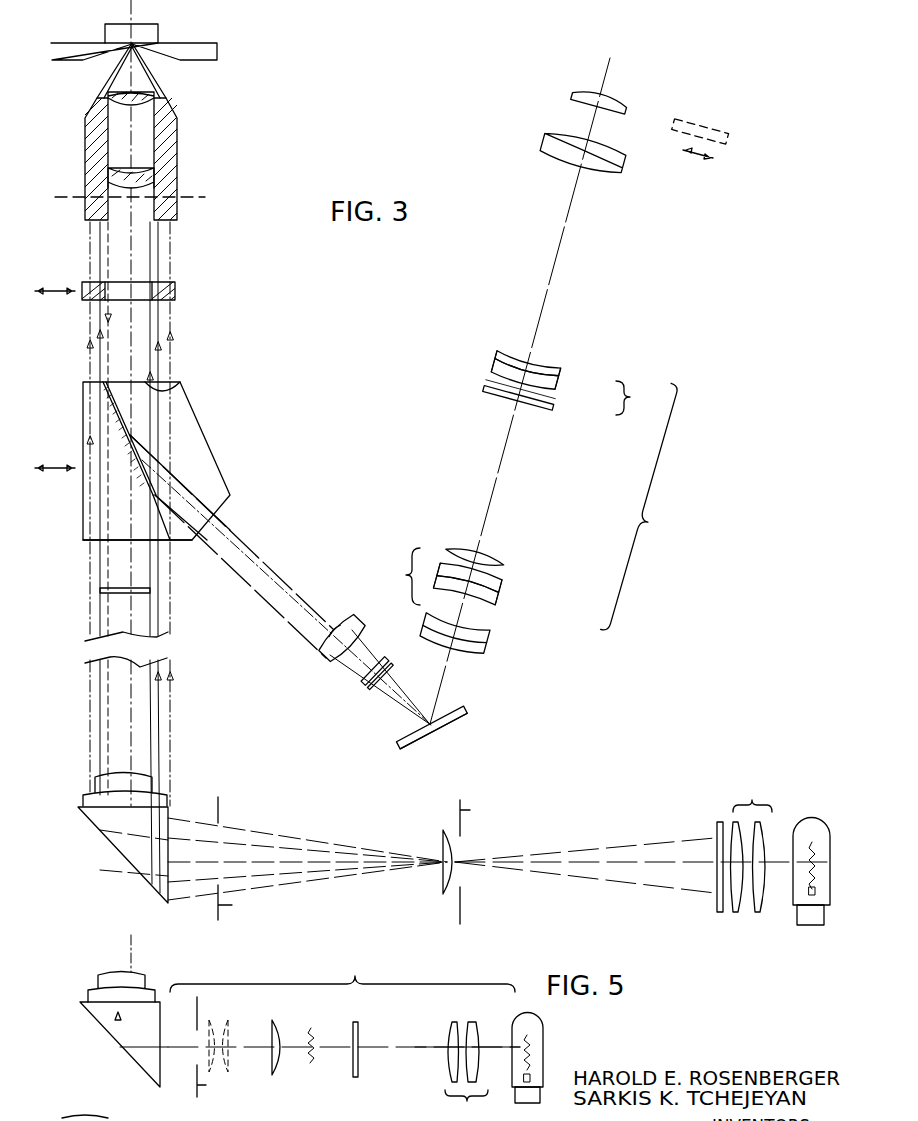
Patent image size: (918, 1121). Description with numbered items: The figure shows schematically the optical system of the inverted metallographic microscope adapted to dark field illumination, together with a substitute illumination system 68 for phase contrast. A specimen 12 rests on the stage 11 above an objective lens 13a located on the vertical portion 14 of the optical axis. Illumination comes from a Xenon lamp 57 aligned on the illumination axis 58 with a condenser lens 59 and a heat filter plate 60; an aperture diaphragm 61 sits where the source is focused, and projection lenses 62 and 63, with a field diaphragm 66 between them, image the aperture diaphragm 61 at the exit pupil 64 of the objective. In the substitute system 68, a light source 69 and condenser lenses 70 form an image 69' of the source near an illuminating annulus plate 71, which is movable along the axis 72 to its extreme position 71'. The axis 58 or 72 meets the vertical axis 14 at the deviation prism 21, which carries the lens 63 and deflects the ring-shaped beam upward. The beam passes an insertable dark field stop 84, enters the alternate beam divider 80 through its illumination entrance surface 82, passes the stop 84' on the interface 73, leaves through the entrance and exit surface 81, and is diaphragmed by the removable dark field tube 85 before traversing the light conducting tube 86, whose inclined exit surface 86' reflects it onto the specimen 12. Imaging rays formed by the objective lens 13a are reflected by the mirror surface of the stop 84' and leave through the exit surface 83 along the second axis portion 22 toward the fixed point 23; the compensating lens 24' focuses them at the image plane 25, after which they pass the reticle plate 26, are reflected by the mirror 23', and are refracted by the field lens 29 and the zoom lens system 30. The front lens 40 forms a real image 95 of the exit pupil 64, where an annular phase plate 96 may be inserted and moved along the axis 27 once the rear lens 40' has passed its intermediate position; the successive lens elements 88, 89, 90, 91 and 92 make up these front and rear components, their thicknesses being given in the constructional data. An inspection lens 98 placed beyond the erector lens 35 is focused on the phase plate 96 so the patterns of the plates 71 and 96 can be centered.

In FIG. 3, the stage 11 is at (214, 52).
In FIG. 3, the specimen 12 is at (158, 34).
In FIG. 3, the objective lens 13a is at (145, 143).
In FIG. 3, the vertical portion of the optical axis 14 is at (131, 253).
In FIG. 5, the vertical portion of the optical axis 14 is at (120, 945).
In FIG. 3, the deviation prism 21 is at (172, 814).
In FIG. 5, the deviation prism 21 is at (106, 1016).
In FIG. 3, the second axis portion 22 is at (250, 575).
In FIG. 3, the fixed point 23 is at (409, 730).
In FIG. 3, the mirror 23' is at (444, 738).
In FIG. 3, the compensating lens 24' is at (323, 643).
In FIG. 3, the image plane 25 is at (368, 680).
In FIG. 3, the reticle plate 26 is at (378, 676).
In FIG. 3, the axis 27 is at (490, 489).
In FIG. 3, the field lens 29 is at (458, 648).
In FIG. 3, the zoom lens system 30 is at (644, 508).
In FIG. 3, the erector lens 35 is at (626, 161).
In FIG. 3, the front lens 40 is at (471, 571).
In FIG. 3, the rear lens 40' is at (562, 368).
In FIG. 3, the Xenon lamp 57 is at (814, 820).
In FIG. 3, the illumination axis 58 is at (633, 866).
In FIG. 3, the condenser lens 59 is at (752, 845).
In FIG. 3, the heat filter plate 60 is at (717, 830).
In FIG. 5, the heat filter plate 60 is at (450, 1064).
In FIG. 3, the aperture diaphragm 61 is at (480, 862).
In FIG. 3, the projection lens 62 is at (443, 845).
In FIG. 5, the projection lens 62 is at (280, 1072).
In FIG. 3, the projection lens 63 is at (88, 791).
In FIG. 5, the projection lens 63 is at (88, 987).
In FIG. 3, the exit pupil 64 is at (206, 197).
In FIG. 3, the field diaphragm 66 is at (240, 858).
In FIG. 5, the field diaphragm 66 is at (200, 1084).
In FIG. 5, the substitute illumination system 68 is at (342, 972).
In FIG. 5, the light source 69 is at (555, 1057).
In FIG. 5, the image of the light source 69' is at (322, 1068).
In FIG. 5, the condenser lenses 70 is at (466, 1071).
In FIG. 5, the illuminating annulus plate 71 is at (369, 1065).
In FIG. 5, the opposite extreme position of illuminating annulus plate 71' is at (238, 1054).
In FIG. 5, the axis 72 is at (420, 1052).
In FIG. 3, the interface 73 is at (131, 437).
In FIG. 3, the alternate beam divider 80 is at (82, 417).
In FIG. 3, the entrance and exit surface 81 is at (168, 396).
In FIG. 3, the illumination entrance surface 82 is at (108, 541).
In FIG. 3, the exit surface 83 is at (232, 498).
In FIG. 3, the dark field stop 84 is at (98, 602).
In FIG. 3, the dark field stop 84' is at (159, 418).
In FIG. 3, the dark field tube 85 is at (176, 296).
In FIG. 3, the light conducting tube 86 is at (150, 162).
In FIG. 3, the exit surface 86' is at (101, 79).
In FIG. 3, the lens element 88 is at (440, 585).
In FIG. 3, the lens element 89 is at (440, 566).
In FIG. 3, the lens element 90 is at (488, 553).
In FIG. 3, the lens element 91 is at (498, 368).
In FIG. 3, the lens element 92 is at (522, 355).
In FIG. 3, the real image of the exit pupil 95 is at (490, 365).
In FIG. 3, the annular phase plate 96 is at (523, 402).
In FIG. 3, the inspection lens 98 is at (688, 122).